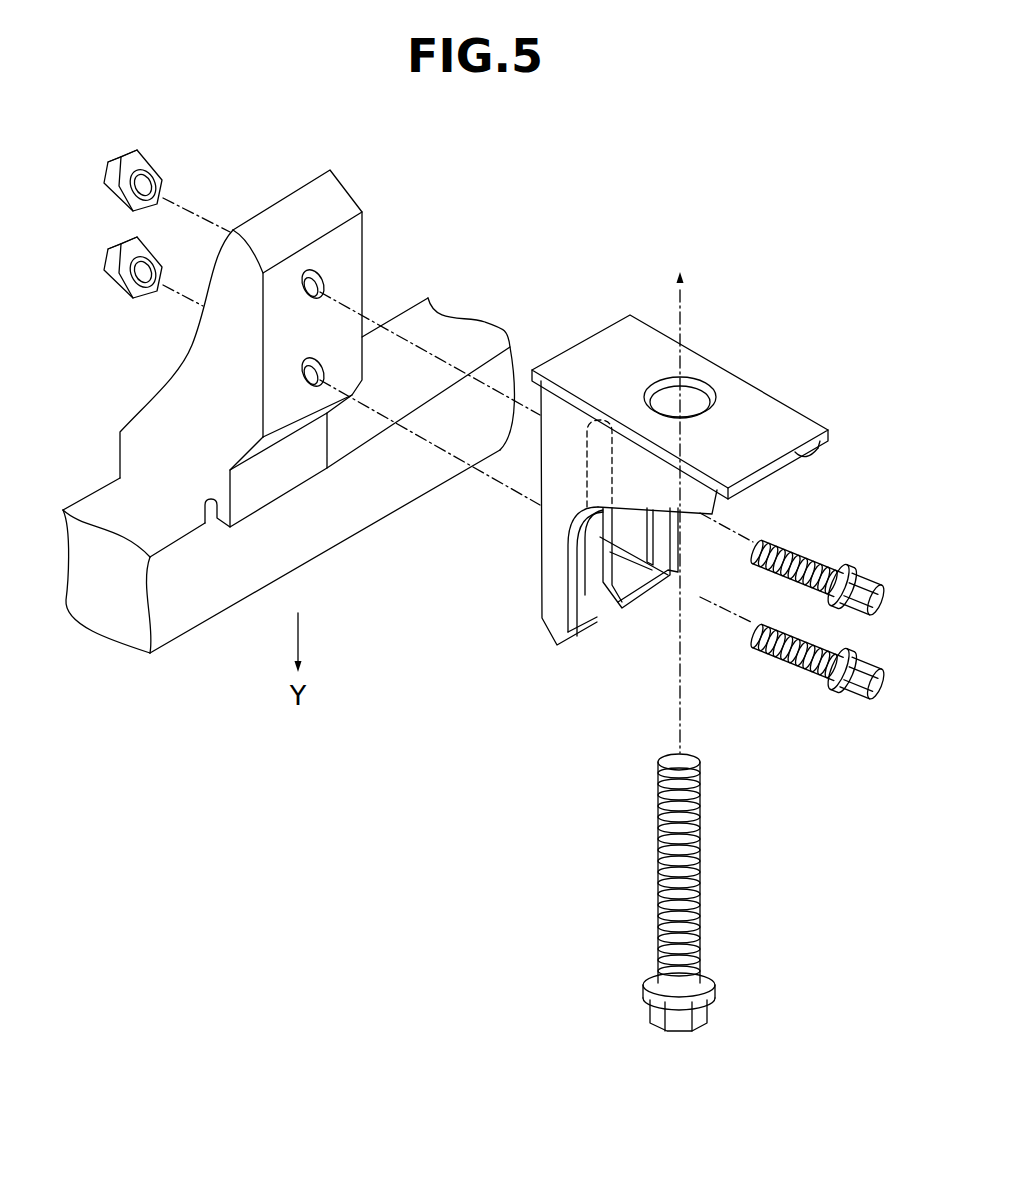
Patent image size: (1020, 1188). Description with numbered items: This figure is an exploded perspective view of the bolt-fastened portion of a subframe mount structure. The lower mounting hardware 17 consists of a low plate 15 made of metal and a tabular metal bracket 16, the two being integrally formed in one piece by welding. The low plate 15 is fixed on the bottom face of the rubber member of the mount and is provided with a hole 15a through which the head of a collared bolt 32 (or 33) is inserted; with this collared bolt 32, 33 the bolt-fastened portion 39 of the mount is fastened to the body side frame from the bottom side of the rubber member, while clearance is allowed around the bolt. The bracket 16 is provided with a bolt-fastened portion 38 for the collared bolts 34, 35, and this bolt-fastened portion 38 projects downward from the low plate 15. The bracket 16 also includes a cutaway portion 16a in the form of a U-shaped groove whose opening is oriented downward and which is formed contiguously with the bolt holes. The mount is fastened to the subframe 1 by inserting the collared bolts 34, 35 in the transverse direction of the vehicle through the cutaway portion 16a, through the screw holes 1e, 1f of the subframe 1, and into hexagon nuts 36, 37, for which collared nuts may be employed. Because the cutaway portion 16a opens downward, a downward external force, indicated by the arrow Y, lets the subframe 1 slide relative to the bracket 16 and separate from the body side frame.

The subframe 1 is at (350, 186).
The screw hole 1e is at (307, 290).
The screw hole 1f is at (320, 378).
The low plate 15 is at (755, 397).
The hole 15a is at (663, 400).
The bracket 16 is at (543, 588).
The cutaway portion 16a is at (608, 610).
The lower mounting hardware 17 is at (818, 415).
The collared bolt 32 is at (700, 878).
The collared bolt 33 is at (679, 892).
The collared bolt 34 is at (852, 570).
The collared bolt 35 is at (852, 713).
The hexagon nut 36 is at (117, 170).
The hexagon nut 37 is at (117, 256).
The bolt-fastened portion 38 is at (328, 347).
The bolt-fastened portion 39 is at (688, 371).